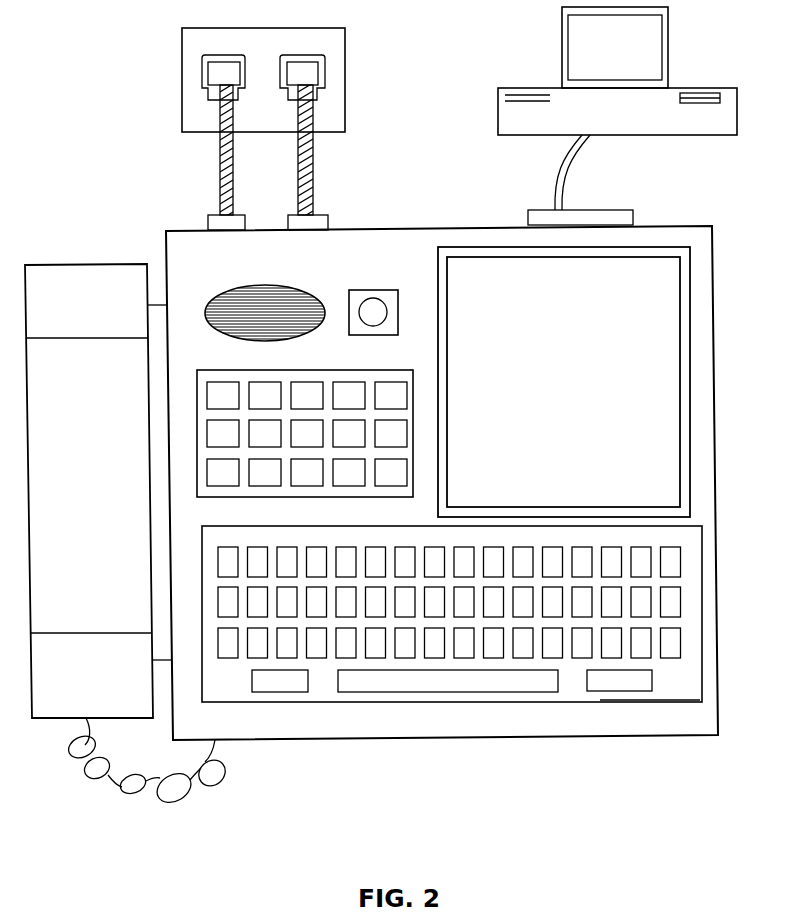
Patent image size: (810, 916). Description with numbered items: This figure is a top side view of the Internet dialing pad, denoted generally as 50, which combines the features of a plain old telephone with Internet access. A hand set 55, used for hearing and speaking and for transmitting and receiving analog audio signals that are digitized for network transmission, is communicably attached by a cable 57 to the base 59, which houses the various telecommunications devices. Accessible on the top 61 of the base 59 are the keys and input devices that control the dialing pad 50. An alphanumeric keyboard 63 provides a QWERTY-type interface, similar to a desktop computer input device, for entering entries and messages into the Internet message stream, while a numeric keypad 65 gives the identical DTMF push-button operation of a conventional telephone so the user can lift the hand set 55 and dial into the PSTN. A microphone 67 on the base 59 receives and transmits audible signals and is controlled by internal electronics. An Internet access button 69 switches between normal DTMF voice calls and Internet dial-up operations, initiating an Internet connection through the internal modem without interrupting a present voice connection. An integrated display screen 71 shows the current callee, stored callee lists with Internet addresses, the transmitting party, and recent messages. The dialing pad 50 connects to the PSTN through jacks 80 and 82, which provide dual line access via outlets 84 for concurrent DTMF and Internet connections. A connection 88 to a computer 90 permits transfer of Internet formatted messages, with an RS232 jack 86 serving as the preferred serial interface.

The dialing pad 50 is at (114, 852).
The hand set 55 is at (42, 718).
The cable 57 is at (224, 781).
The base 59 is at (468, 737).
The top 61 is at (645, 717).
The alphanumeric keyboard 63 is at (685, 673).
The numeric keypad 65 is at (233, 490).
The microphone 67 is at (285, 285).
The Internet access button 69 is at (360, 290).
The display screen 71 is at (673, 437).
The jack 80 is at (245, 215).
The jack 82 is at (328, 215).
The outlets 84 is at (338, 106).
The RS232 jack 86 is at (633, 212).
The connection 88 is at (570, 165).
The computer 90 is at (690, 88).